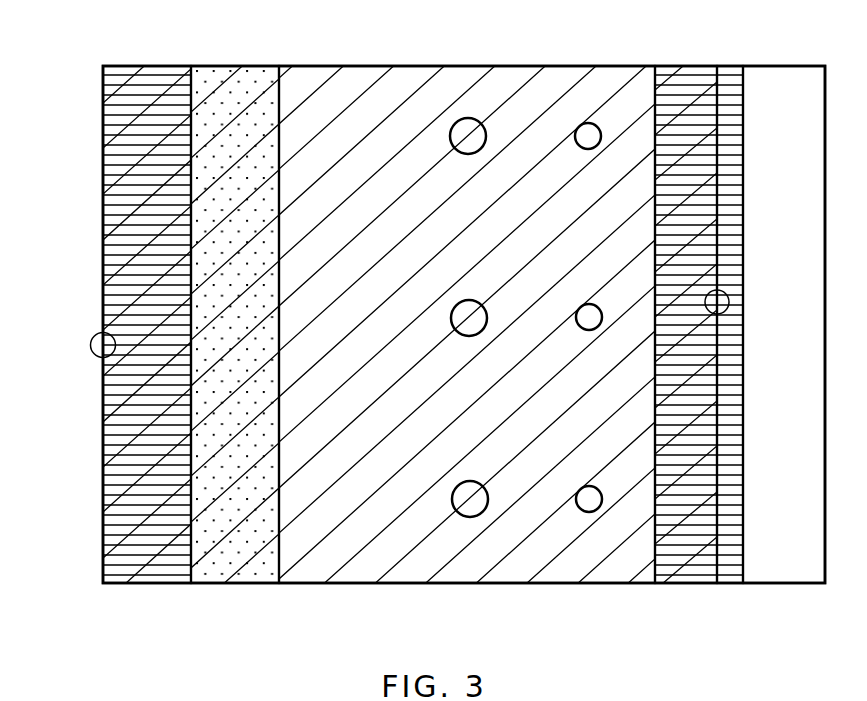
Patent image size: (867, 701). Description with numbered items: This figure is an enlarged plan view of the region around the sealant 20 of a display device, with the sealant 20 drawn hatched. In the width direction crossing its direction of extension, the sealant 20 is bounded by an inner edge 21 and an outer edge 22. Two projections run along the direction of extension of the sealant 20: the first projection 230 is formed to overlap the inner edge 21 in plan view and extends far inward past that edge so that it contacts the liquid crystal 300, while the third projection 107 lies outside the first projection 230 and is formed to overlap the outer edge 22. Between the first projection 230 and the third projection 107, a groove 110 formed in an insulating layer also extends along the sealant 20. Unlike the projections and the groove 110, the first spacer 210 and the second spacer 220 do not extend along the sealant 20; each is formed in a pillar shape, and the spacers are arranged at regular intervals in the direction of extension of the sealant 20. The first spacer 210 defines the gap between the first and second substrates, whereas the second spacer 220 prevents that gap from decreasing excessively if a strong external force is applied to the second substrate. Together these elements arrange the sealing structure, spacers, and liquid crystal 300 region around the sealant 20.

The third projection 107 is at (153, 77).
The groove 110 is at (235, 77).
The sealant 20 is at (567, 78).
The first spacer 210 is at (467, 128).
The second spacer 220 is at (590, 127).
The first projection 230 is at (697, 77).
The liquid crystal 300 is at (788, 77).
The inner edge 21 is at (730, 298).
The outer edge 22 is at (91, 345).